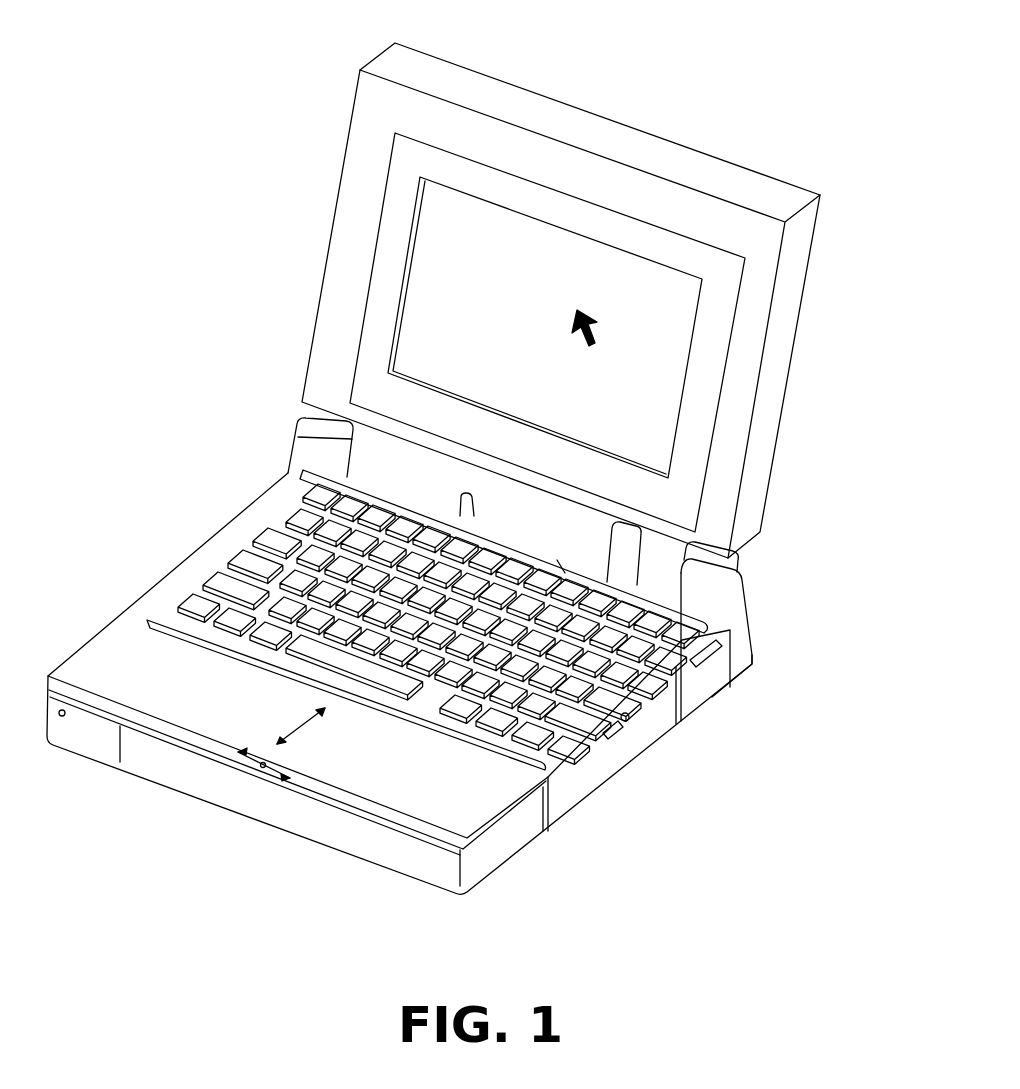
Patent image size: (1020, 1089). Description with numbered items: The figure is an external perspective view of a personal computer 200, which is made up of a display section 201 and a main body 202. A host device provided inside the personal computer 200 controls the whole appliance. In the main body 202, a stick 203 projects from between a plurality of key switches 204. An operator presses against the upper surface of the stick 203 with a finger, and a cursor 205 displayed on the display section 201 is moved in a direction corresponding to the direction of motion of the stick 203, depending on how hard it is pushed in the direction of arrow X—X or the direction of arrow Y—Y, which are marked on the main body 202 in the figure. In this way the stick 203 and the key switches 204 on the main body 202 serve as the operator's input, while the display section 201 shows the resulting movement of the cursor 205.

The personal computer 200 is at (483, 465).
The display section 201 is at (611, 301).
The main body 202 is at (520, 840).
The stick 203 is at (390, 615).
The key switches 204 is at (628, 721).
The cursor 205 is at (593, 340).